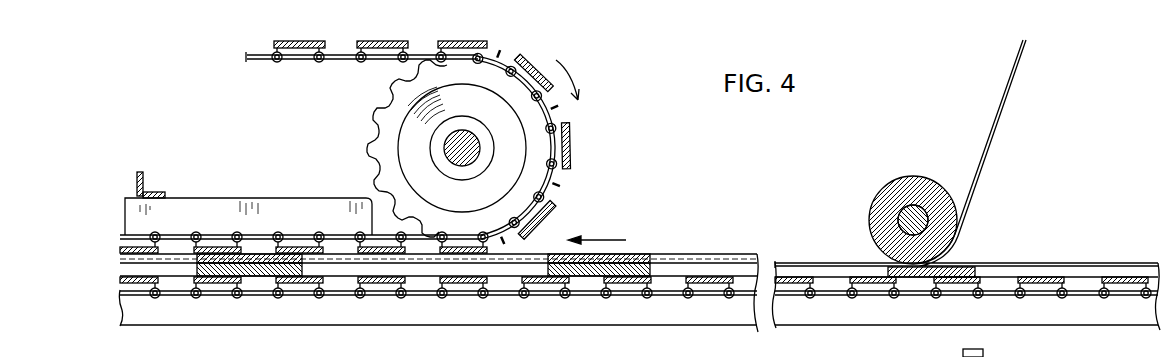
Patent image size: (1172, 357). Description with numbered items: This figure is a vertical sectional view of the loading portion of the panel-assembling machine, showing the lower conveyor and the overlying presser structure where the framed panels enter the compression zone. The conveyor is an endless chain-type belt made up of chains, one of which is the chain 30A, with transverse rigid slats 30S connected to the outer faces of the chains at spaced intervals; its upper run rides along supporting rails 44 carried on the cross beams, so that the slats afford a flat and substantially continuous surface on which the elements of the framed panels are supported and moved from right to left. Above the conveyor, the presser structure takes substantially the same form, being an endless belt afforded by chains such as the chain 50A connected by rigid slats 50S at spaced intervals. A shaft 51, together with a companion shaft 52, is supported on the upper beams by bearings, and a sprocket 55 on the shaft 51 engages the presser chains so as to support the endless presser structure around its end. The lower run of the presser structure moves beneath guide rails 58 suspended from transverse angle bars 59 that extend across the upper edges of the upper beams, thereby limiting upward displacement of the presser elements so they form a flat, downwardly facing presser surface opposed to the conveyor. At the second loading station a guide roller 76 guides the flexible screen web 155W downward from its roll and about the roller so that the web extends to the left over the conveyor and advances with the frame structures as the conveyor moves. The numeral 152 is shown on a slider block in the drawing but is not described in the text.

The shaft 51 is at (443, 147).
The sprocket 55 is at (525, 178).
The guide rail 58 is at (207, 213).
The transverse angle bar 59 is at (146, 176).
The rigid slat 50S is at (293, 250).
The slider block 152 is at (637, 257).
The supporting rail 44 is at (398, 317).
The chain 30A is at (1147, 298).
The transverse rigid slat 30S is at (1037, 280).
The screen web 155W is at (990, 154).
The guide roller 76 is at (887, 190).
The chain 50A is at (948, 356).
The shaft 52 is at (965, 350).